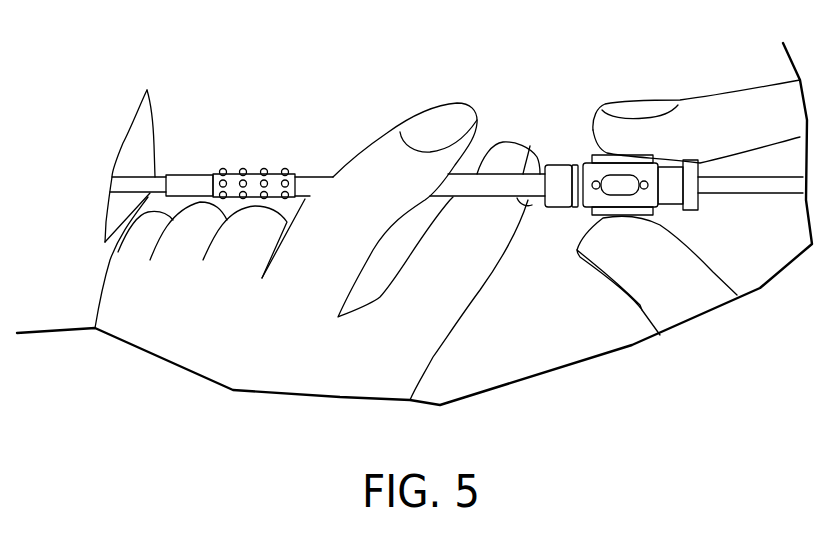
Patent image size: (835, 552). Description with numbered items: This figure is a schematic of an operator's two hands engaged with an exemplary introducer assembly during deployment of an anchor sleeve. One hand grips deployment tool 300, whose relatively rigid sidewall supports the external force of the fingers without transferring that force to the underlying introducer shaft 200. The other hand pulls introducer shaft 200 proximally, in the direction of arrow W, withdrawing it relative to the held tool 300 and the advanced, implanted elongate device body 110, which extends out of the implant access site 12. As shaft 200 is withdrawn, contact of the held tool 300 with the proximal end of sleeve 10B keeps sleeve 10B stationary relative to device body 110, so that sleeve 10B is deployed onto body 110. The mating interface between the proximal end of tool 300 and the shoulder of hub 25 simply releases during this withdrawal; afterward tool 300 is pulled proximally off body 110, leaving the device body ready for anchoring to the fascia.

The implant access site 12 is at (110, 208).
The introducer shaft 200 is at (170, 134).
The anchor sleeve 10B is at (280, 137).
The deployment tool 300 is at (606, 185).
The hub 25 is at (588, 204).
The elongate body of medical device 110 is at (746, 193).
The arrow indicating proximal withdrawal direction W is at (700, 78).